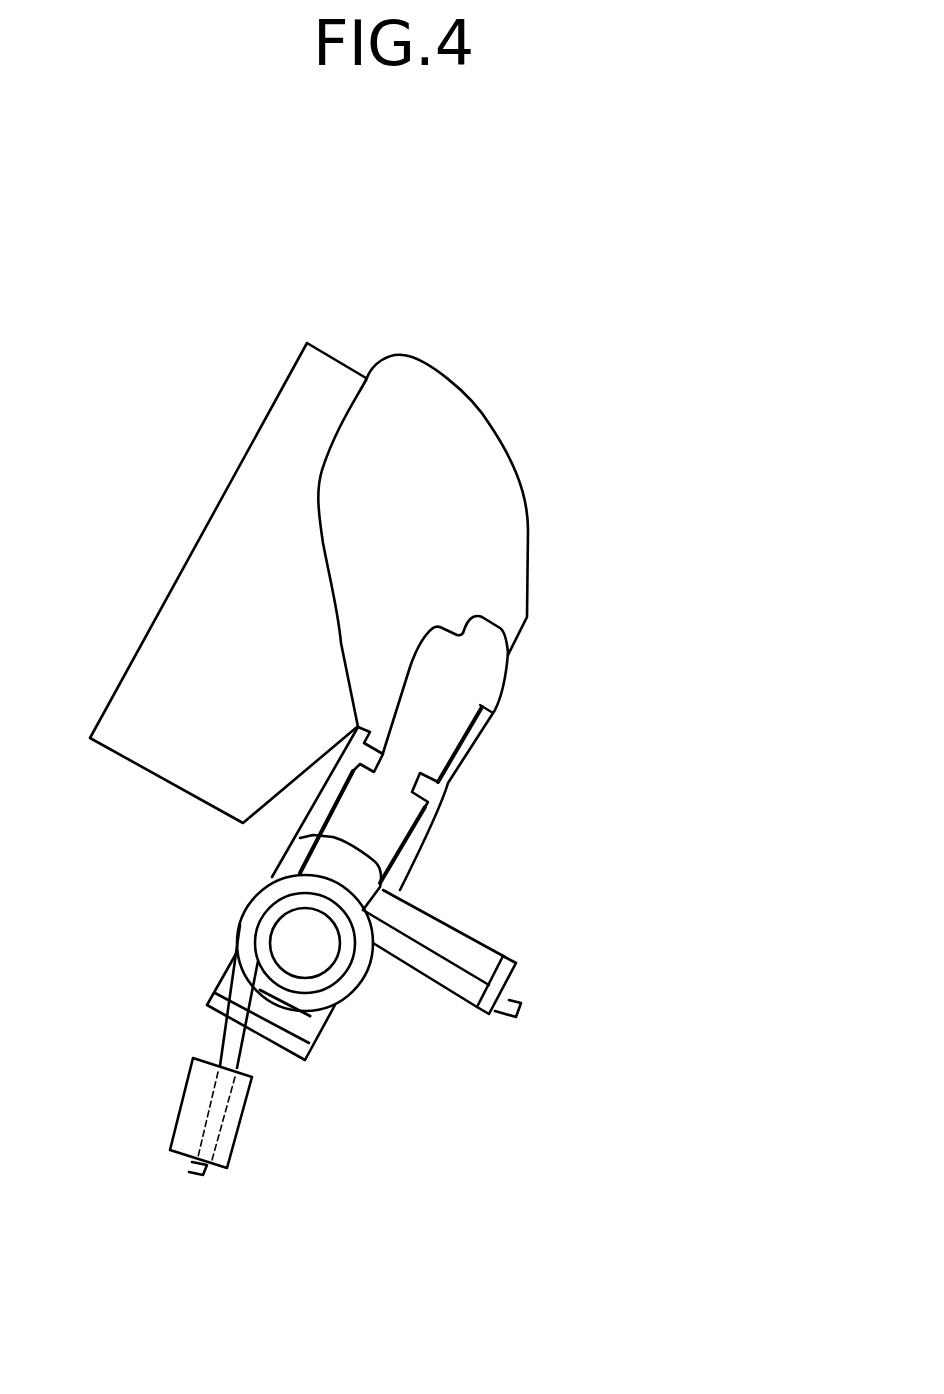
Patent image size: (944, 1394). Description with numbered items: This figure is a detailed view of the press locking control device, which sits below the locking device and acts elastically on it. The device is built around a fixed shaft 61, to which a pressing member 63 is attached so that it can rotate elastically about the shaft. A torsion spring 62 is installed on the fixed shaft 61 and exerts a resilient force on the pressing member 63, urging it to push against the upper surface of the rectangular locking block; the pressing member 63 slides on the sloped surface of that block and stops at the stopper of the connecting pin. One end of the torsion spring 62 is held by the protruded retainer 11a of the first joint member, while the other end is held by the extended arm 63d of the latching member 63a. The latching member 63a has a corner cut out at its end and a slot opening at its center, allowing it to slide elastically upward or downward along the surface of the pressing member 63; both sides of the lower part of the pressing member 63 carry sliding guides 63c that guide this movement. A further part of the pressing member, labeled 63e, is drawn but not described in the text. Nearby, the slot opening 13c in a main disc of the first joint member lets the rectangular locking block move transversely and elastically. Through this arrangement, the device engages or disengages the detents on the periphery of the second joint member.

The slot opening 13c is at (308, 418).
The pressing member 63 is at (536, 453).
The latching member 63a is at (493, 648).
The sliding guides 63c is at (445, 788).
The stopper 63e is at (350, 868).
The extended arm 63d is at (503, 977).
The torsion spring 62 is at (255, 912).
The fixed shaft 61 is at (315, 953).
The protruded retainer 11a is at (183, 1123).